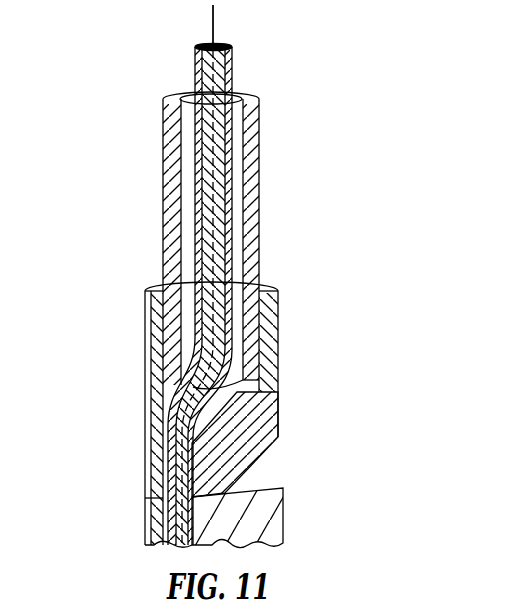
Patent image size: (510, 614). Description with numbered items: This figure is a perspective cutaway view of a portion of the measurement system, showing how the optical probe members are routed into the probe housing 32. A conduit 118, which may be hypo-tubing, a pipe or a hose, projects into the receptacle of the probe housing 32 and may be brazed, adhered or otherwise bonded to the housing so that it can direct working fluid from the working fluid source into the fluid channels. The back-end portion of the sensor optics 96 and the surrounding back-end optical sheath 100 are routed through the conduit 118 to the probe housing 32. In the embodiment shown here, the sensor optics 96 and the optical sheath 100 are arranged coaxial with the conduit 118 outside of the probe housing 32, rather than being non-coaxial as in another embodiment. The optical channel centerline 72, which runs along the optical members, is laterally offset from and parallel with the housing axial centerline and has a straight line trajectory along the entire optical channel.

The axial centerline of the optical channel 72 is at (213, 12).
The conduit 118 is at (259, 172).
The sensor optics 96 is at (225, 298).
The probe housing 32 is at (318, 476).
The back-end optical sheath 100 is at (150, 526).